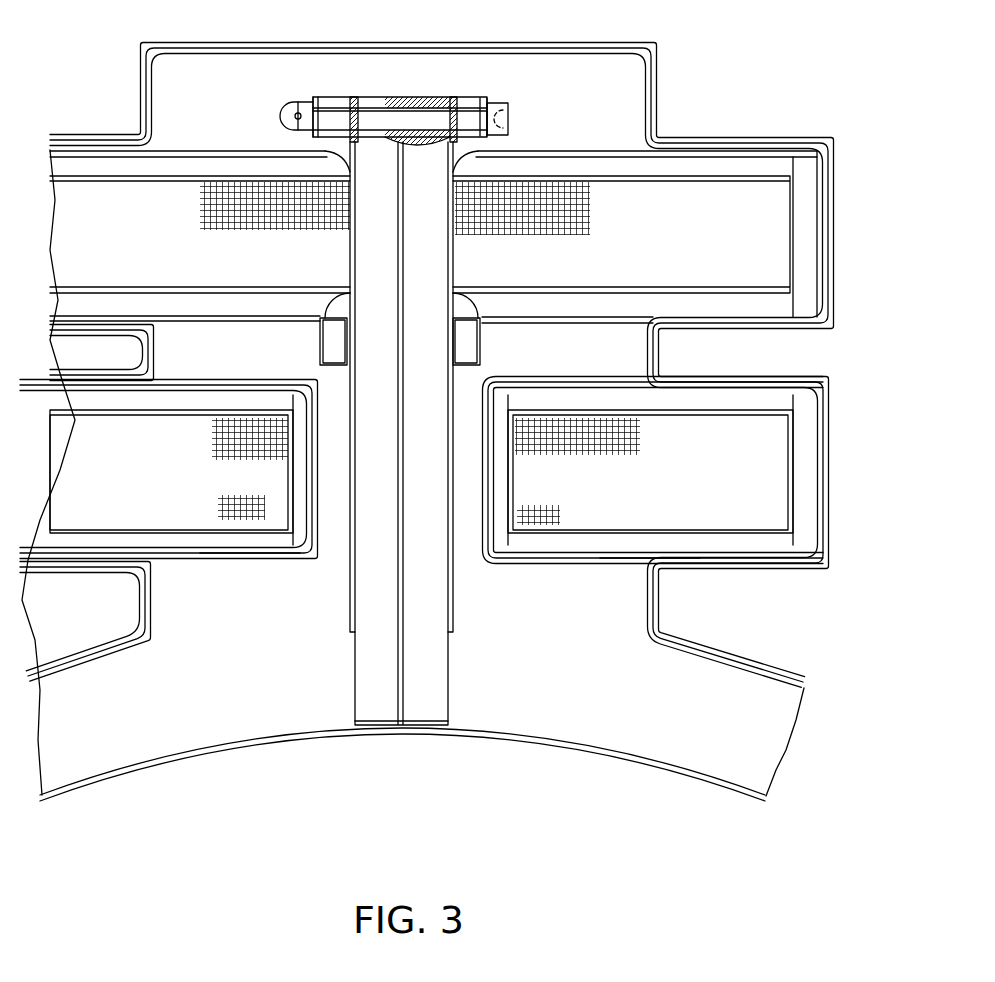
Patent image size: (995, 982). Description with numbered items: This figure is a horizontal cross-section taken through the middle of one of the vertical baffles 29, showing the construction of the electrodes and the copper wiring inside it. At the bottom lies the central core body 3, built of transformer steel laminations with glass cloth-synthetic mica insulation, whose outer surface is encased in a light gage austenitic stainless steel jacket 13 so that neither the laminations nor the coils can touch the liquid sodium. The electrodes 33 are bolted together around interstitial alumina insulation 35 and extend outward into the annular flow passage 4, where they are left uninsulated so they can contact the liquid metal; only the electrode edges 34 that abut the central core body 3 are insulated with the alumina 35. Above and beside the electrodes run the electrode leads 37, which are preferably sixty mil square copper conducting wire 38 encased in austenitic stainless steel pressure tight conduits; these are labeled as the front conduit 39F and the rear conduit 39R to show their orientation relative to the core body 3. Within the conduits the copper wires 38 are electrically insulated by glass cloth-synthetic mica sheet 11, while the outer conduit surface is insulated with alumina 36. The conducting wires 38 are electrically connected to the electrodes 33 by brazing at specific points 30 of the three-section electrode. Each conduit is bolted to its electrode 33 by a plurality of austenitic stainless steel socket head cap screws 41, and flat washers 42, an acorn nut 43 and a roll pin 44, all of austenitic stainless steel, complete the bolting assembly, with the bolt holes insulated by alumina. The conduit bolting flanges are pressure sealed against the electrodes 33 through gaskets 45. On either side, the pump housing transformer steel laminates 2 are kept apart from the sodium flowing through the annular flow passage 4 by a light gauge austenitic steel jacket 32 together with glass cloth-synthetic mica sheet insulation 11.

The pump housing transformer steel laminates 2 is at (97, 621).
The central core body 3 is at (450, 779).
The annular flow passage 4 is at (173, 689).
The glass cloth-synthetic mica sheet 11 is at (836, 152).
The austenitic stainless steel jacket 13 is at (626, 756).
The vertical baffle 29 is at (735, 78).
The brazing points 30 is at (448, 214).
The austenitic steel jacket 32 is at (825, 212).
The electrode 33 is at (390, 599).
The electrode edges 34 is at (400, 733).
The alumina insulation 35 is at (403, 505).
The alumina 36 is at (228, 557).
The electrode leads 37 is at (173, 488).
The copper conducting wire 38 is at (538, 428).
The front conduit 39F is at (290, 540).
The rear conduit 39R is at (103, 157).
The socket head cap screw 41 is at (500, 105).
The flat washer 42 is at (480, 99).
The acorn nut 43 is at (285, 113).
The roll pin 44 is at (316, 100).
The gasket 45 is at (355, 97).